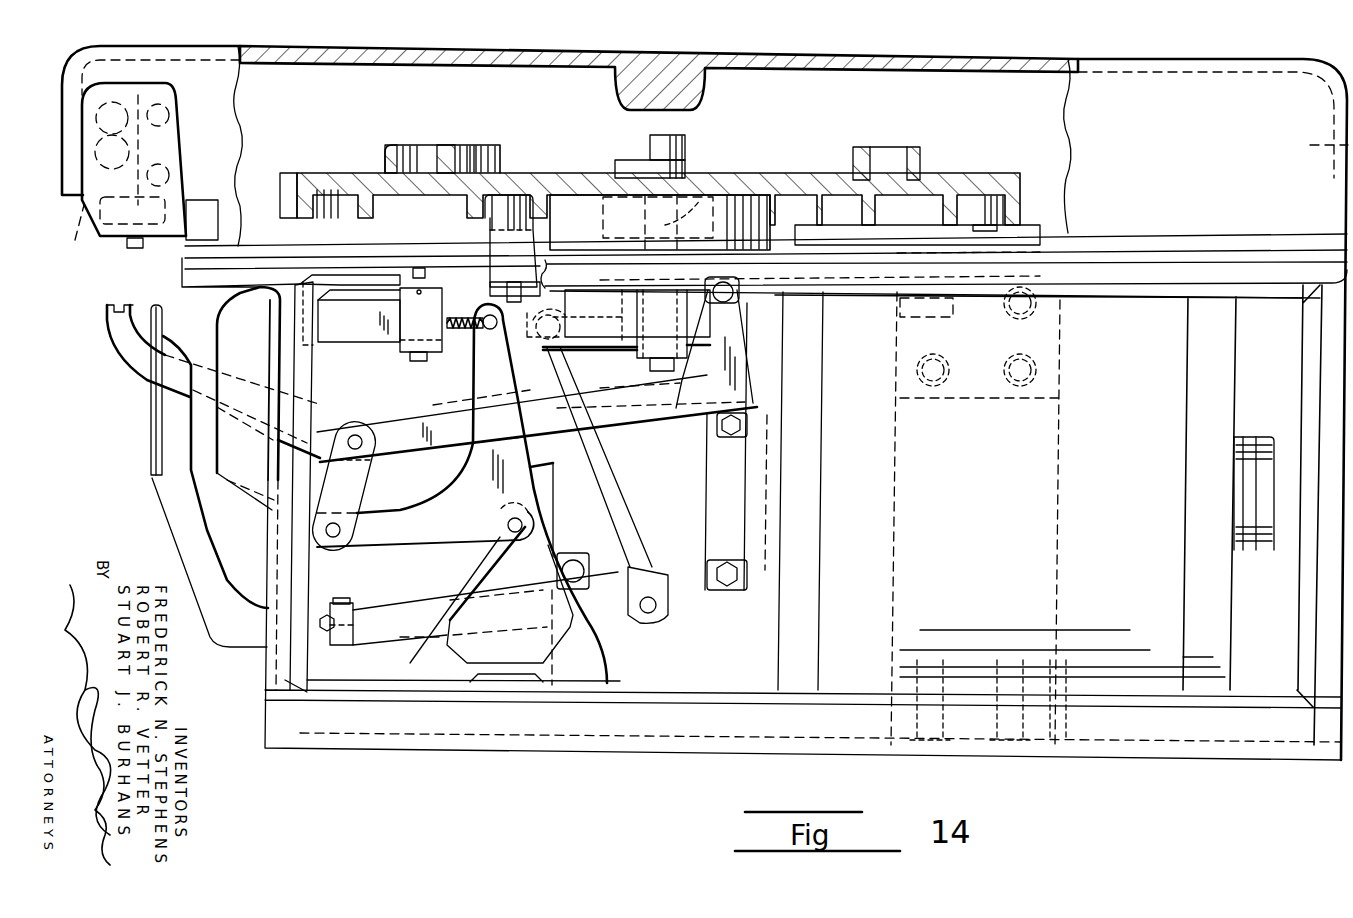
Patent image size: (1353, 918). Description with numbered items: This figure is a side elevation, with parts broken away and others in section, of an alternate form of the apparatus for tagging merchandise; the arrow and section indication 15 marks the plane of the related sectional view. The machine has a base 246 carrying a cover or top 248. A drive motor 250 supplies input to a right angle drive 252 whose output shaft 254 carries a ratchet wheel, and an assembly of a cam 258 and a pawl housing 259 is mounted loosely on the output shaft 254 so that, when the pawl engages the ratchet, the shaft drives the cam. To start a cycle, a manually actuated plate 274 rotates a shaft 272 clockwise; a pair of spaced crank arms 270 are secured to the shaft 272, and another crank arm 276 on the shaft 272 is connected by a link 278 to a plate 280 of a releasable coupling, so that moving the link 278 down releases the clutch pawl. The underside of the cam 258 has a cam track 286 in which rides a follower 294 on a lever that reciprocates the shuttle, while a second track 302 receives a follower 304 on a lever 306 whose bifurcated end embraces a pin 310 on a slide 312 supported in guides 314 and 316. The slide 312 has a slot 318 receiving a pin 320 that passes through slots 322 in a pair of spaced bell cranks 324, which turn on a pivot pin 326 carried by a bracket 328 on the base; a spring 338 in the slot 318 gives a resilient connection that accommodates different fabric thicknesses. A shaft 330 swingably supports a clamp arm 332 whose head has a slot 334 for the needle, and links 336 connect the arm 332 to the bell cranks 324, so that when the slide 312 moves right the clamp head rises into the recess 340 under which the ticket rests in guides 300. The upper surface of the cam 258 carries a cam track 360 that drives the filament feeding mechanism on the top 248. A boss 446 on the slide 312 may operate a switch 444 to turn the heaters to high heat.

The section line for FIG. 15 is at (50, 120).
The base 246 is at (1052, 760).
The cover or top 248 is at (1033, 58).
The drive motor 250 is at (1163, 603).
The right angle drive 252 is at (703, 677).
The output shaft 254 is at (668, 140).
The cam 258 is at (920, 153).
The pawl housing 259 is at (780, 203).
The crank arms 270 is at (180, 517).
The shaft 272 is at (330, 600).
The plate 274 is at (152, 412).
The crank arm 276 is at (403, 627).
The link 278 is at (623, 523).
The plate 280 is at (577, 345).
The cam track 286 is at (318, 208).
The follower 294 is at (982, 203).
The guides 300 is at (118, 245).
The second track 302 is at (490, 213).
The follower 304 is at (528, 213).
The lever 306 is at (497, 247).
The pin 310 is at (553, 273).
The slide 312 is at (347, 333).
The guide 314 is at (403, 353).
The guide 316 is at (675, 410).
The slot 318 is at (457, 313).
The pin 320 is at (510, 333).
The slots 322 is at (490, 337).
The bell cranks 324 is at (467, 465).
The pivot pin 326 is at (502, 540).
The bracket 328 is at (448, 622).
The shaft 330 is at (735, 303).
The clamp arm 332 is at (327, 423).
The slot 334 is at (103, 318).
The links 336 is at (333, 473).
The spring 338 is at (460, 330).
The recess 340 is at (134, 176).
The cam track 360 is at (397, 157).
The switch 444 is at (421, 268).
The boss 446 is at (347, 290).